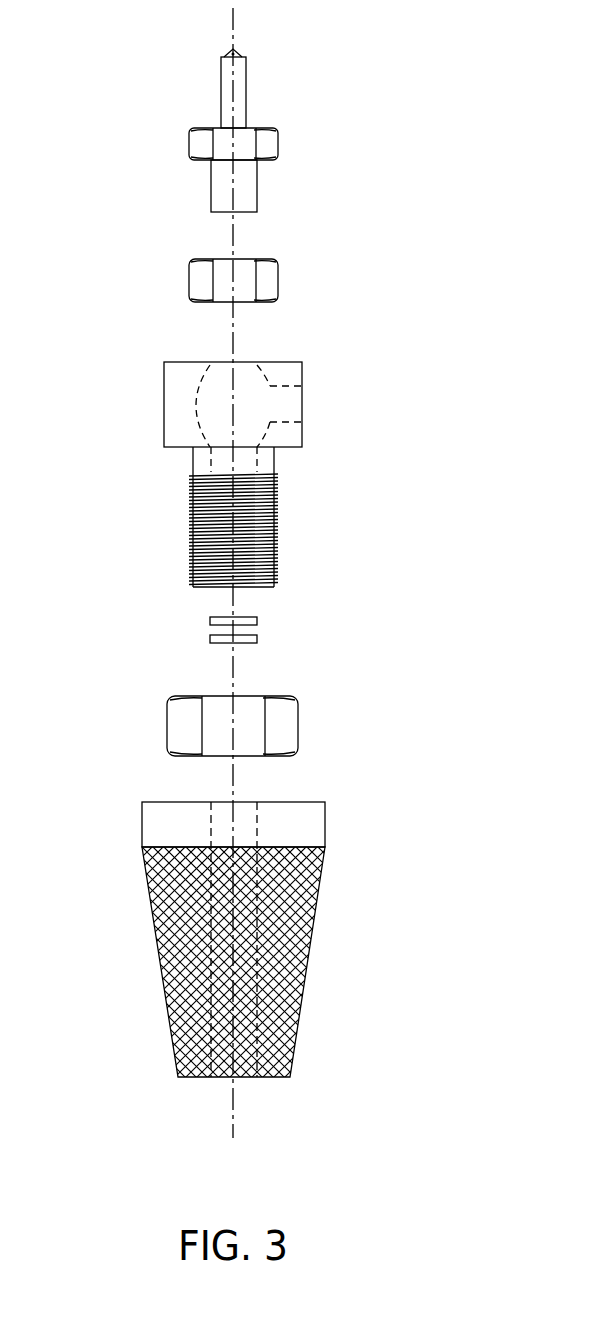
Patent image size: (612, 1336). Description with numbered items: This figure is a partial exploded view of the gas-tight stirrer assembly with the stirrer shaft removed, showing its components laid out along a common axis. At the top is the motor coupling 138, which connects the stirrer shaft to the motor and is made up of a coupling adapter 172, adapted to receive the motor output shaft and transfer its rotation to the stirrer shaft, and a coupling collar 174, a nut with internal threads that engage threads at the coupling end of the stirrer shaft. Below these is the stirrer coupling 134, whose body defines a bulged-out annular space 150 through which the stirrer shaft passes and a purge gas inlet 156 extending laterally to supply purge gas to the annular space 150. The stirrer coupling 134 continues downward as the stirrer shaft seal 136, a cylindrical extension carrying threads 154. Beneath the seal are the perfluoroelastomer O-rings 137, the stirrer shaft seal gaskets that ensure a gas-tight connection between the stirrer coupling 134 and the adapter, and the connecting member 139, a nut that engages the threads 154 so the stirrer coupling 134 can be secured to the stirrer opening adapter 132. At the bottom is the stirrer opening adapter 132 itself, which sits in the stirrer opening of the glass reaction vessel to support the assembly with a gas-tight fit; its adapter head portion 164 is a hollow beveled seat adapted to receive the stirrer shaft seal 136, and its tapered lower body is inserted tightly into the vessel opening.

The stirrer opening adapter 132 is at (306, 989).
The stirrer coupling 134 is at (243, 474).
The stirrer shaft seal 136 is at (191, 521).
The O-rings 137 is at (285, 628).
The motor coupling 138 is at (258, 175).
The connecting member 139 is at (167, 723).
The annular space 150 is at (197, 397).
The threads 154 is at (189, 486).
The purge gas inlet 156 is at (292, 407).
The adapter head portion 164 is at (152, 823).
The coupling adapter 172 is at (189, 143).
The coupling collar 174 is at (189, 275).